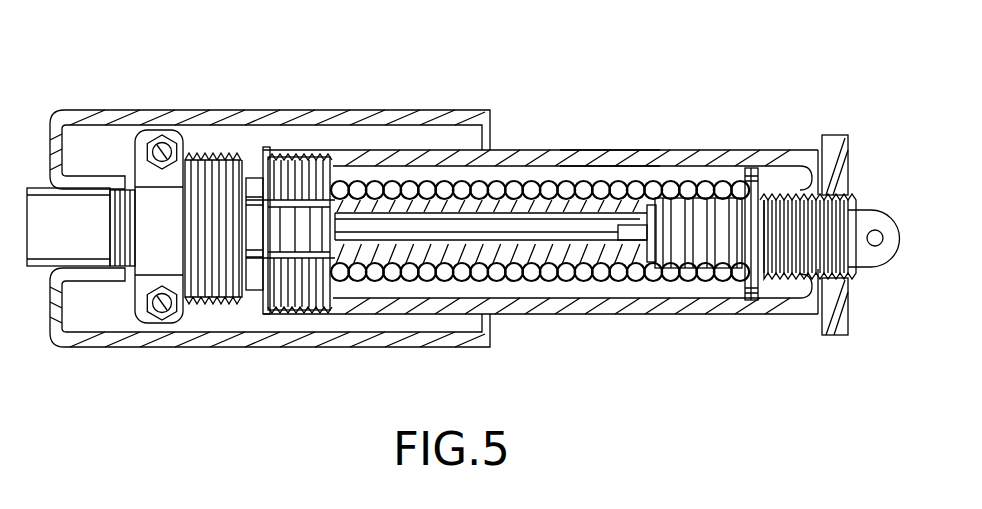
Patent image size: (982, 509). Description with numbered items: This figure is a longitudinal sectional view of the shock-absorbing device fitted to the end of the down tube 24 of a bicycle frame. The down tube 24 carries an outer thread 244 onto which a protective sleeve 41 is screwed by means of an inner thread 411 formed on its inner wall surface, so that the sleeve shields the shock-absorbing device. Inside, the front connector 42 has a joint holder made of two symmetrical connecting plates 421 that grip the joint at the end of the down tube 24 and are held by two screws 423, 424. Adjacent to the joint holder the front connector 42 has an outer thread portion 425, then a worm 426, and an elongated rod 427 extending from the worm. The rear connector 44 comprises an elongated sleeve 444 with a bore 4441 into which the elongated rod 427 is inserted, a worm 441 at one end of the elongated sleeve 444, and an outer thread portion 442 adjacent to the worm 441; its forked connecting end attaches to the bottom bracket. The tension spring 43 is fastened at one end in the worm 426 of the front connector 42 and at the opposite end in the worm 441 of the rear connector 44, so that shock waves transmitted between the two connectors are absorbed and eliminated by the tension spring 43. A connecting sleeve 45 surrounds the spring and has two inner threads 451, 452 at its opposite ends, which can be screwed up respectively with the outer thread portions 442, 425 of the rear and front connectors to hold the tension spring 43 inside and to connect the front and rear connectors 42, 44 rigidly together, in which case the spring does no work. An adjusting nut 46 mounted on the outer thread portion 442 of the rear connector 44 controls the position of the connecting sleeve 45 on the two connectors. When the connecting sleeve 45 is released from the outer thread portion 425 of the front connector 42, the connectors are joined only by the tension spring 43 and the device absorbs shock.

The down tube 24 is at (77, 214).
The outer thread 244 is at (92, 334).
The protective sleeve 41 is at (298, 128).
The inner thread 411 is at (113, 186).
The connecting plate 421 is at (125, 336).
The screw 423 is at (176, 136).
The screw 424 is at (186, 335).
The front connector 42 is at (210, 150).
The outer thread portion 425 is at (240, 336).
The worm 426 is at (332, 278).
The elongated rod 427 is at (457, 228).
The bore 4441 is at (628, 242).
The inner thread 452 is at (319, 158).
The tension spring 43 is at (374, 186).
The connecting sleeve 45 is at (612, 166).
The elongated sleeve 444 is at (504, 182).
The worm 441 is at (693, 200).
The outer thread portion 442 is at (771, 312).
The inner thread 451 is at (816, 170).
The rear connector 44 is at (860, 185).
The adjusting nut 46 is at (841, 336).